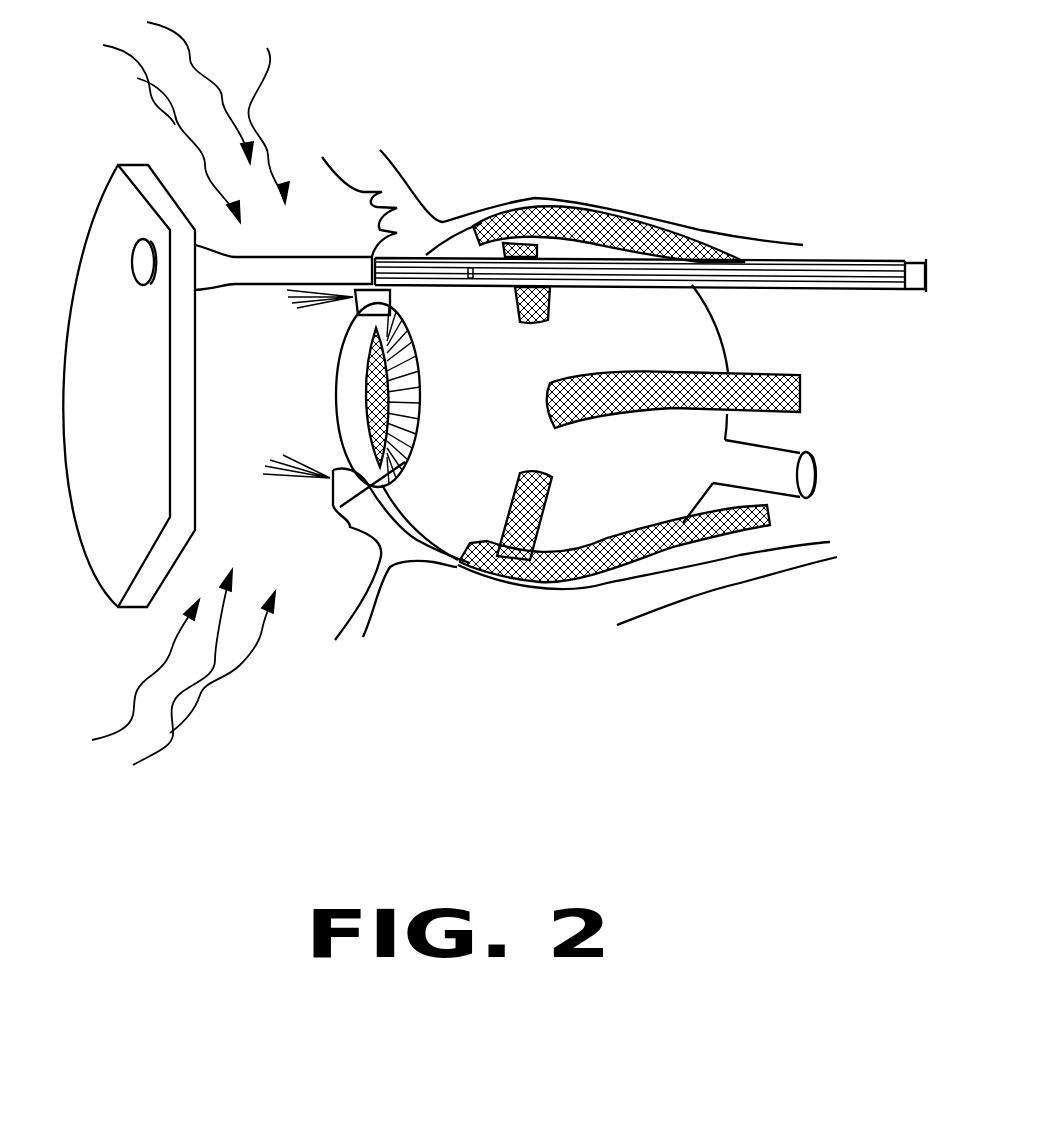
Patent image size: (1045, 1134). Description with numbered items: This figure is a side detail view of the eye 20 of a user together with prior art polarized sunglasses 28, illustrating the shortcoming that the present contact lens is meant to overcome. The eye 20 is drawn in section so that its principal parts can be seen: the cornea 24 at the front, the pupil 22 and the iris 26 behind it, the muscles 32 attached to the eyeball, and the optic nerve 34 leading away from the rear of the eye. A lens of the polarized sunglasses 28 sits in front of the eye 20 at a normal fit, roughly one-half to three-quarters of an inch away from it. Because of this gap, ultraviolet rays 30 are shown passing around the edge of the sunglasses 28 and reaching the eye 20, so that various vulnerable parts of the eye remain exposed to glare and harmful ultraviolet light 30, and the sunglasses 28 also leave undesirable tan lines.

The eye 20 is at (453, 568).
The pupil 22 is at (368, 370).
The cornea 24 is at (340, 400).
The iris 26 is at (355, 520).
The polarized sunglasses 28 is at (87, 230).
The ultraviolet rays 30 is at (207, 190).
The muscles 32 is at (648, 232).
The optic nerve 34 is at (813, 475).